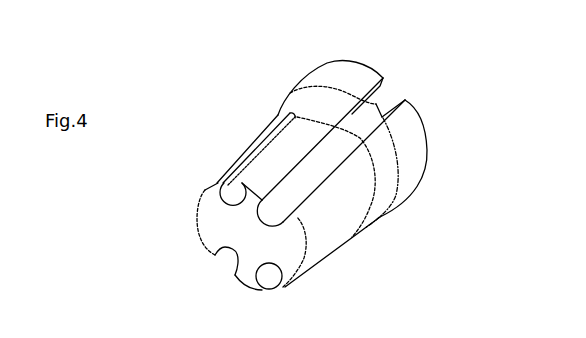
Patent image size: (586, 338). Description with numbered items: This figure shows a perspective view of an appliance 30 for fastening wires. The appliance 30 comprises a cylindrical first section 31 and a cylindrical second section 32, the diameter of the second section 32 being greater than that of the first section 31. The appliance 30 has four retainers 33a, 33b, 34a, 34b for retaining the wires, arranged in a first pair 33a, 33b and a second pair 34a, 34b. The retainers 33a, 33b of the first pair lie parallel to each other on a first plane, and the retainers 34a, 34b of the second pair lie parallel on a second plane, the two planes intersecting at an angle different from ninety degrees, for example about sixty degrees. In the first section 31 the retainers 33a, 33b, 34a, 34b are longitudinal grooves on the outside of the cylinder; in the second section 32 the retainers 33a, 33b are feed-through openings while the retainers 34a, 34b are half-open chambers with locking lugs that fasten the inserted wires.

The appliance 30 is at (243, 232).
The cylindrical first section 31 is at (340, 207).
The cylindrical second section 32 is at (407, 153).
The first retainer of the first pair 33a is at (232, 179).
The second retainer of the first pair 33b is at (270, 275).
The first retainer of the second pair 34a is at (313, 165).
The second retainer of the second pair 34b is at (230, 262).